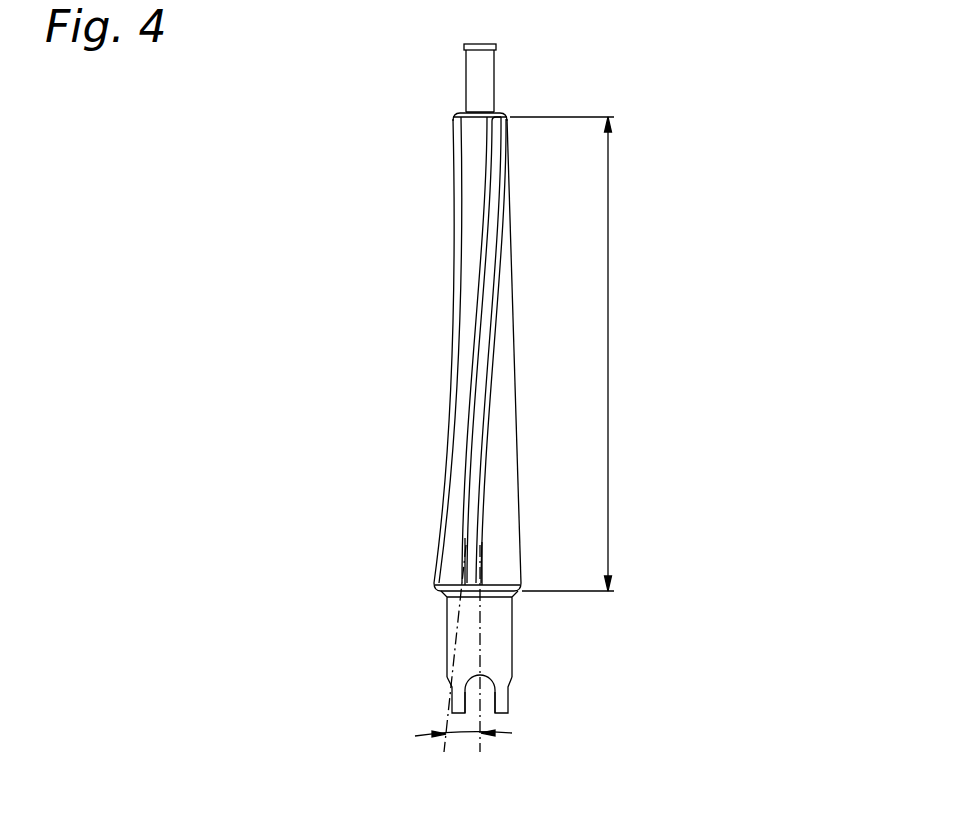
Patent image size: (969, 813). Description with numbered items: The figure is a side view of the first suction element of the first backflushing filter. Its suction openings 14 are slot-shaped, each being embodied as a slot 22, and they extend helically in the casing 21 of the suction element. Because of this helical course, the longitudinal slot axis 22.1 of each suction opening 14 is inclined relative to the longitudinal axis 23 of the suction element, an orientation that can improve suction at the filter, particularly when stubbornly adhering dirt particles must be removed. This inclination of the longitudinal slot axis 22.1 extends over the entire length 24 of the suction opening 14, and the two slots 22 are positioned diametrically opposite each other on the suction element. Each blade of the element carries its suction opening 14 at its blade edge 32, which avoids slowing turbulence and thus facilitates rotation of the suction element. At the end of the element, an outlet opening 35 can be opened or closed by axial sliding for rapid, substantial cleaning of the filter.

The casing 21 is at (458, 366).
The blade edge 32 is at (490, 195).
The suction opening 14 is at (468, 507).
The slot 22 is at (460, 567).
The longitudinal slot axis 22.1 is at (447, 648).
The longitudinal axis 23 is at (512, 652).
The outlet opening 35 is at (493, 700).
The length 24 is at (608, 363).